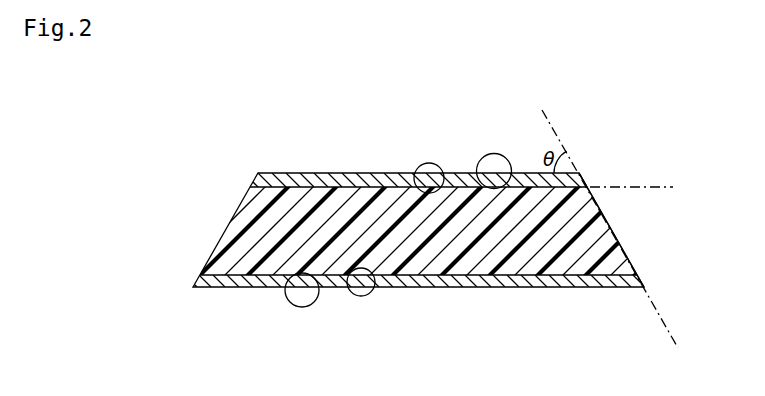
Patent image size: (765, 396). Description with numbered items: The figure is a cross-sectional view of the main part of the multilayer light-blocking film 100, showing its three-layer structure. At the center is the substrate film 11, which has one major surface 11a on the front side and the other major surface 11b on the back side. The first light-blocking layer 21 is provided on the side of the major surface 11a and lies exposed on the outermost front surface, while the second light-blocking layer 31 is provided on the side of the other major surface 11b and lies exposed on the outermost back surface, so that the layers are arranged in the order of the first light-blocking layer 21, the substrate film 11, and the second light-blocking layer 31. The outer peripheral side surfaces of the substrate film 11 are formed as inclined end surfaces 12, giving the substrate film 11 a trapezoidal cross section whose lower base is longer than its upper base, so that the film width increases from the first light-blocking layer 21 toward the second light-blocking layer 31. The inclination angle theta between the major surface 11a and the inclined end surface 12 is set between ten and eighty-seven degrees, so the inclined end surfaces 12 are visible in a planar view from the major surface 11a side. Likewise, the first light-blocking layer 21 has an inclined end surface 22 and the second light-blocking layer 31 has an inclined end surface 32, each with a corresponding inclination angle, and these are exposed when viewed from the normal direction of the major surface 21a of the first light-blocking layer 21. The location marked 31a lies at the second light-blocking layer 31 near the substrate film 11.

The multilayer light-blocking film 100 is at (457, 152).
The substrate film 11 is at (238, 227).
The major surface 11a is at (430, 188).
The other major surface 11b is at (360, 269).
The inclined end surface 12 is at (617, 240).
The first light-blocking layer 21 is at (254, 185).
The major surface 21a is at (503, 188).
The inclined end surface 22 is at (585, 179).
The second light-blocking layer 31 is at (202, 277).
The end portion of second light-blocking layer 31a is at (299, 274).
The inclined end surface 32 is at (641, 283).